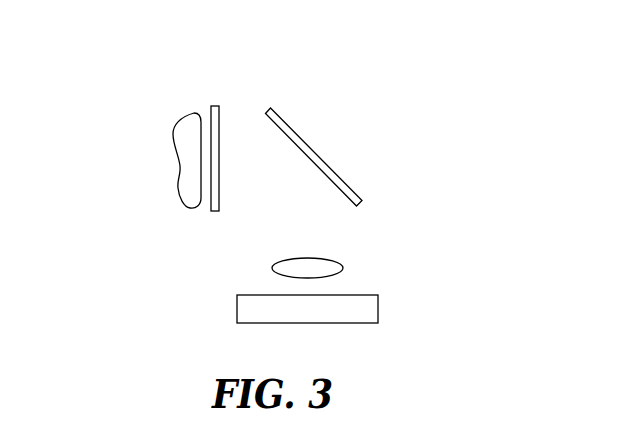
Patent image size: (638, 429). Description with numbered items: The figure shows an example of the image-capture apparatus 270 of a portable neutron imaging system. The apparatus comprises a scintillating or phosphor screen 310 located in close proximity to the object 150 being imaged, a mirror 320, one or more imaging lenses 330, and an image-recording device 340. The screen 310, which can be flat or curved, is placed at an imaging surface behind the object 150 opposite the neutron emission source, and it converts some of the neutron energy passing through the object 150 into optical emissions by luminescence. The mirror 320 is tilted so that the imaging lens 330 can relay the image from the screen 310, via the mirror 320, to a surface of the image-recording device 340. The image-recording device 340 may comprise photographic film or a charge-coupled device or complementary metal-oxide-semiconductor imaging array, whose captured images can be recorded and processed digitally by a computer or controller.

The image-capture apparatus 270 is at (425, 81).
The object 150 is at (190, 112).
The scintillating or phosphor screen 310 is at (216, 105).
The mirror 320 is at (350, 183).
The imaging lens 330 is at (287, 258).
The image-recording device 340 is at (362, 295).